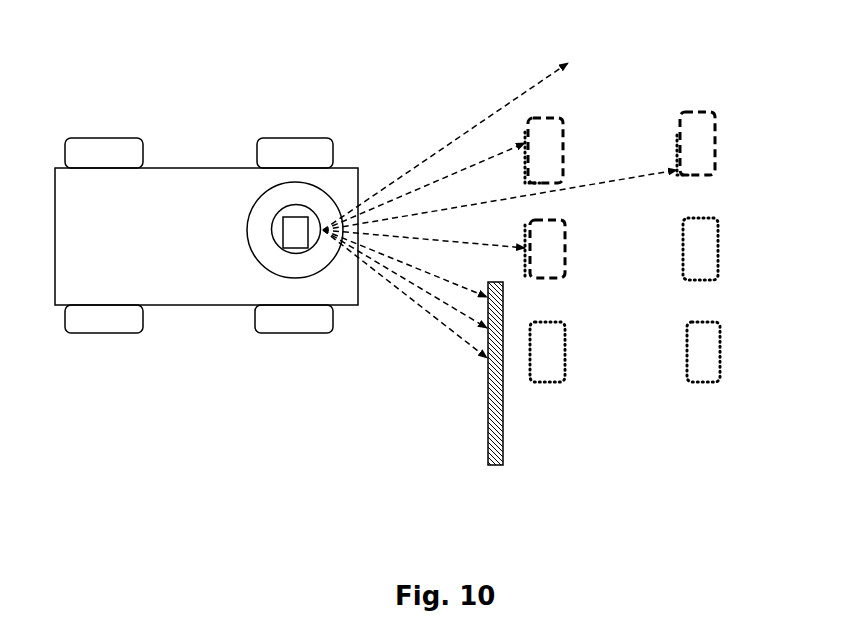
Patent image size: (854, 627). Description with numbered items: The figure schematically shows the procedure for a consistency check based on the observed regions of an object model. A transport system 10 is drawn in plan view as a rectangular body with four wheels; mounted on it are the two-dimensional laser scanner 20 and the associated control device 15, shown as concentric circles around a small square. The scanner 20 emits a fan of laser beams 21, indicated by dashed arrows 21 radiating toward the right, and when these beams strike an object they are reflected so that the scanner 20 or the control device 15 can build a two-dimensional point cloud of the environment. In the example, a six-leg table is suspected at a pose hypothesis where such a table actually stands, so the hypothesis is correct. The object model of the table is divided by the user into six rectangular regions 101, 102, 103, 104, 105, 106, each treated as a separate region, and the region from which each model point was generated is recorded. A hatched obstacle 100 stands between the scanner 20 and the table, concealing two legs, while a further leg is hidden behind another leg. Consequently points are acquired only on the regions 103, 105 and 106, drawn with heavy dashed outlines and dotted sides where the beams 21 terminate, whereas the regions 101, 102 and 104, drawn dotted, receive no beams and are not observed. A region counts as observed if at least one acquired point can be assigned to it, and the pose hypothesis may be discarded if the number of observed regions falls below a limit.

The transport system 10 is at (95, 110).
The control device 15 is at (273, 258).
The 2D laser scanner 20 is at (289, 230).
The laser beams 21 is at (390, 180).
The obstacle 100 is at (488, 408).
The rectangular region of the object model 101 is at (565, 365).
The rectangular region of the object model 102 is at (720, 363).
The rectangular region of the object model 103 is at (565, 231).
The rectangular region of the object model 104 is at (718, 262).
The rectangular region of the object model 105 is at (565, 118).
The rectangular region of the object model 106 is at (713, 113).